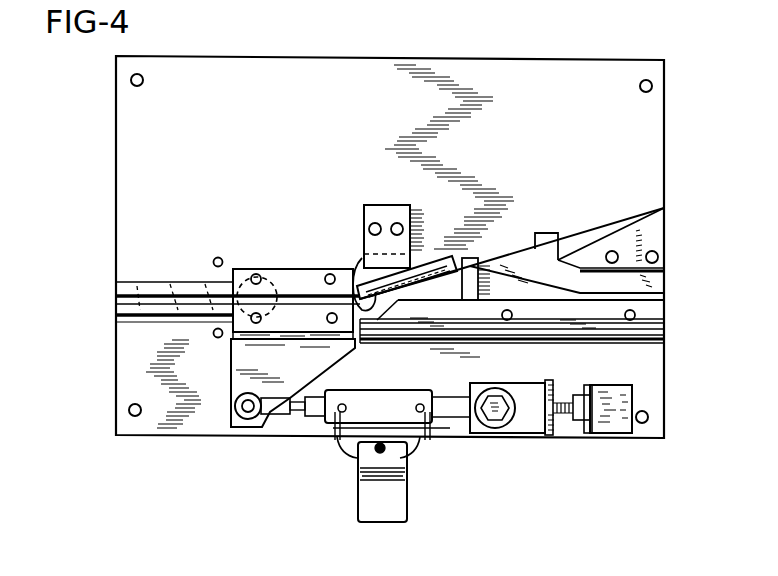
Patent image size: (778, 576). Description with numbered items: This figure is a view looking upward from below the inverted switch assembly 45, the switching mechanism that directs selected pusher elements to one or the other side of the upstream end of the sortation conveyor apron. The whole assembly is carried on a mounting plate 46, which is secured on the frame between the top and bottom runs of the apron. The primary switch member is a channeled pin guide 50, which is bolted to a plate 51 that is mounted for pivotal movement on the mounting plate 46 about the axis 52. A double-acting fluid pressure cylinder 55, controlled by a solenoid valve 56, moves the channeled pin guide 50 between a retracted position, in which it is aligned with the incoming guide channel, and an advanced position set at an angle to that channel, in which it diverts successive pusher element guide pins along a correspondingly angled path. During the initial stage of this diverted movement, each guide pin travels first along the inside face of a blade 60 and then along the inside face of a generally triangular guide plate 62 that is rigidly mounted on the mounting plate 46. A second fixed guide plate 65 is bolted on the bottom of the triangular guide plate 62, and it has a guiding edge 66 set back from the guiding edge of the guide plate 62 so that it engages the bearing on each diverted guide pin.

The inverted switch assembly 45 is at (234, 444).
The mounting plate 46 is at (558, 83).
The channeled pin guide 50 is at (291, 280).
The plate 51 is at (240, 382).
The axis 52 is at (255, 300).
The double-acting fluid pressure cylinder 55 is at (347, 397).
The solenoid valve 56 is at (393, 503).
The blade 60 is at (360, 292).
The generally triangular guide plate 62 is at (525, 253).
The second fixed guide plate 65 is at (617, 238).
The guiding edge 66 is at (588, 255).